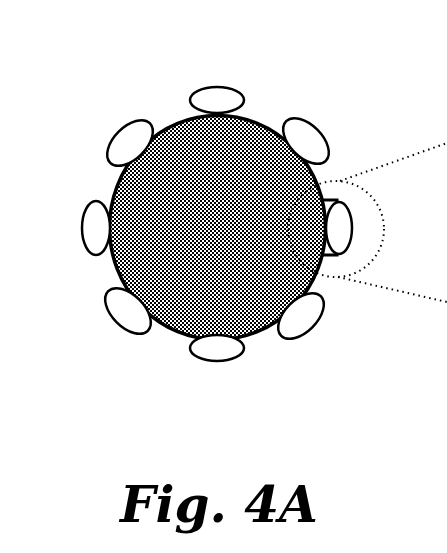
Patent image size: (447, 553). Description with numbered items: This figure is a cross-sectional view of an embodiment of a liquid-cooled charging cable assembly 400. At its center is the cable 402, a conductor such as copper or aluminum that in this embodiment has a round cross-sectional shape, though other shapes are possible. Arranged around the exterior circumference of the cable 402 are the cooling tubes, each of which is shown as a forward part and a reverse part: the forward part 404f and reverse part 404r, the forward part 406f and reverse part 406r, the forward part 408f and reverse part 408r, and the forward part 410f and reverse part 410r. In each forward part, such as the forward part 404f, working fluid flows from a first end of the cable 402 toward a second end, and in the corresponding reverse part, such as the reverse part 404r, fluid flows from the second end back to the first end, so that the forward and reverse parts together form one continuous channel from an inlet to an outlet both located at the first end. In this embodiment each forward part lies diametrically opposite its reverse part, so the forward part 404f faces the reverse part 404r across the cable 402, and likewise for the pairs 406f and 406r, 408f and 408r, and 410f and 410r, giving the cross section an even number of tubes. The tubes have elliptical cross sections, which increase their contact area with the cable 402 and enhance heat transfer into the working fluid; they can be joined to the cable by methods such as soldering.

The wearable device assembly 400 is at (111, 53).
The cable 402 is at (279, 228).
The forward part of cooling tube 404 404f is at (208, 98).
The reverse part of cooling tube 404 404r is at (220, 352).
The forward part of cooling tube 406 406f is at (130, 145).
The reverse part of cooling tube 406 406r is at (298, 323).
The forward part of cooling tube 408 408f is at (98, 230).
The reverse part of cooling tube 408 408r is at (338, 228).
The forward part of cooling tube 410 410f is at (120, 313).
The reverse part of cooling tube 410 410r is at (303, 140).